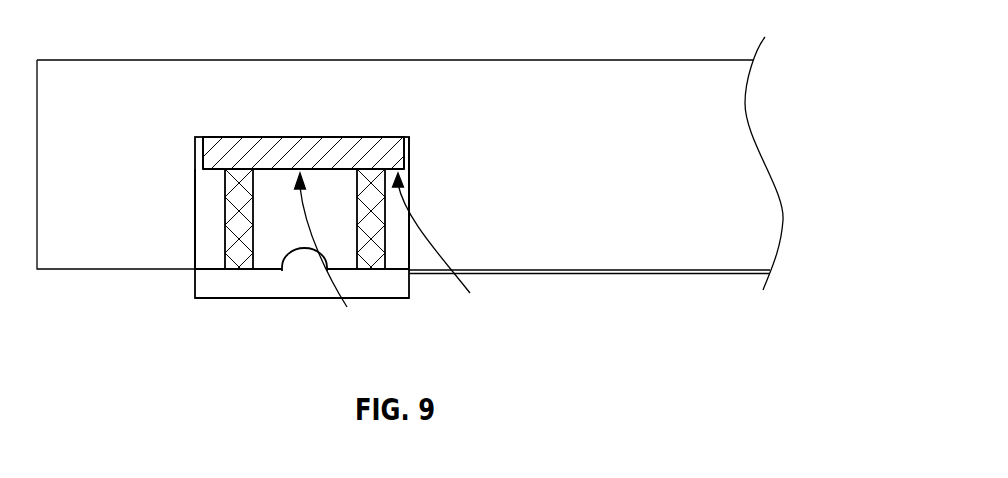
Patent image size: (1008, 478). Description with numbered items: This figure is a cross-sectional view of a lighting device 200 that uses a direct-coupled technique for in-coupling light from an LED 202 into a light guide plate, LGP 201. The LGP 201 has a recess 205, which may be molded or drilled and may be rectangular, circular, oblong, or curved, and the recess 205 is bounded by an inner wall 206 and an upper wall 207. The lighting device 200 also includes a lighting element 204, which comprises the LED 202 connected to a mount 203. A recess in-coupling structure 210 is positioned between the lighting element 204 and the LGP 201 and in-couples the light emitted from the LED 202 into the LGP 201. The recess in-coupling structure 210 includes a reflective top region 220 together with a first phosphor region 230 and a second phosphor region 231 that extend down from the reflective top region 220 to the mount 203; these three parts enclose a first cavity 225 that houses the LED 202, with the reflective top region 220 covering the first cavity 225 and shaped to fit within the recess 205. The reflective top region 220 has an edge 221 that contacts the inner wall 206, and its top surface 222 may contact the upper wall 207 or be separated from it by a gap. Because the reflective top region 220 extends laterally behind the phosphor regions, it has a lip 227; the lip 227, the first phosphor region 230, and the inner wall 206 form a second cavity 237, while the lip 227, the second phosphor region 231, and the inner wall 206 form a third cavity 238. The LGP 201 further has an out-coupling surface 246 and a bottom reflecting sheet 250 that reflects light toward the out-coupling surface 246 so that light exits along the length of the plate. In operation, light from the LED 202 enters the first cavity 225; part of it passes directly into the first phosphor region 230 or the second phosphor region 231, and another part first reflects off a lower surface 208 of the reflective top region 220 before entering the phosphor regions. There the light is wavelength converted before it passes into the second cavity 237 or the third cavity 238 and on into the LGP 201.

The lighting device 200 is at (102, 27).
The light guide plate (LGP) 201 is at (552, 83).
The out-coupling surface 246 is at (652, 60).
The bottom reflecting sheet 250 is at (625, 274).
The inner wall 206 is at (197, 190).
The recess 205 is at (412, 155).
The third cavity 238 is at (203, 235).
The recess in-coupling structure 210 is at (250, 148).
The reflective top region 220 is at (317, 145).
The top surface 222 is at (343, 137).
The upper wall 207 is at (392, 138).
The edge 221 is at (197, 142).
The second phosphor region 231 is at (228, 257).
The first phosphor region 230 is at (373, 253).
The second cavity 237 is at (400, 258).
The lighting element 204 is at (200, 298).
The mount 203 is at (277, 288).
The first cavity 225 is at (263, 253).
The LED 202 is at (313, 261).
The lower surface 208 is at (334, 258).
The lip 227 is at (444, 250).